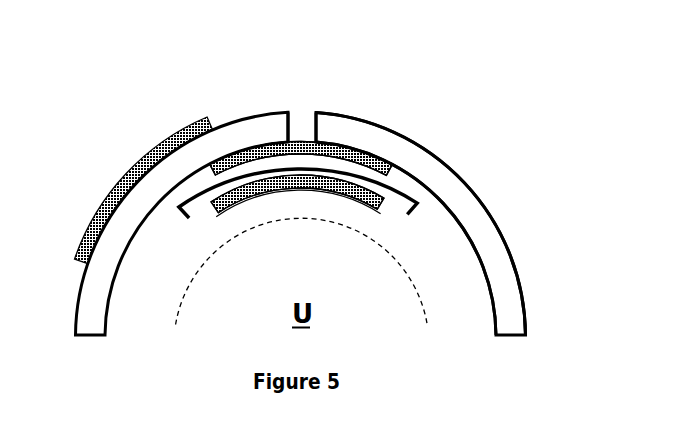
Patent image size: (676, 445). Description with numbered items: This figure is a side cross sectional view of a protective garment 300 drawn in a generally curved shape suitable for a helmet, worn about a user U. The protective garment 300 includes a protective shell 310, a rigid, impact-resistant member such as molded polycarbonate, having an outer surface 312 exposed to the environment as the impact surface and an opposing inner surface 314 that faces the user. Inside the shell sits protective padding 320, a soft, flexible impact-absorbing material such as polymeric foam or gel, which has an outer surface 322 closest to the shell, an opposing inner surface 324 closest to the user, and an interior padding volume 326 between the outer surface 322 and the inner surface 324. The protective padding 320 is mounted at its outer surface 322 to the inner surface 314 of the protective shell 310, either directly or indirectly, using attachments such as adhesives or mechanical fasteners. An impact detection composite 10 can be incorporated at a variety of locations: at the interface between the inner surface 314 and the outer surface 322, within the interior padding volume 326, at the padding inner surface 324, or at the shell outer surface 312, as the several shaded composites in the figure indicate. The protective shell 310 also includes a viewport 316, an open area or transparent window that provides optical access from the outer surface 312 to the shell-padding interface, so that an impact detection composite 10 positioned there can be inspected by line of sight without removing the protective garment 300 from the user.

The protective garment 300 is at (158, 69).
The impact detection composite 10 is at (165, 148).
The protective shell 310 is at (477, 225).
The outer surface 312 is at (378, 124).
The inner surface 314 is at (428, 185).
The viewport 316 is at (302, 112).
The protective padding 320 is at (190, 219).
The outer surface 322 is at (321, 155).
The inner surface 324 is at (360, 197).
The interior padding volume 326 is at (400, 204).